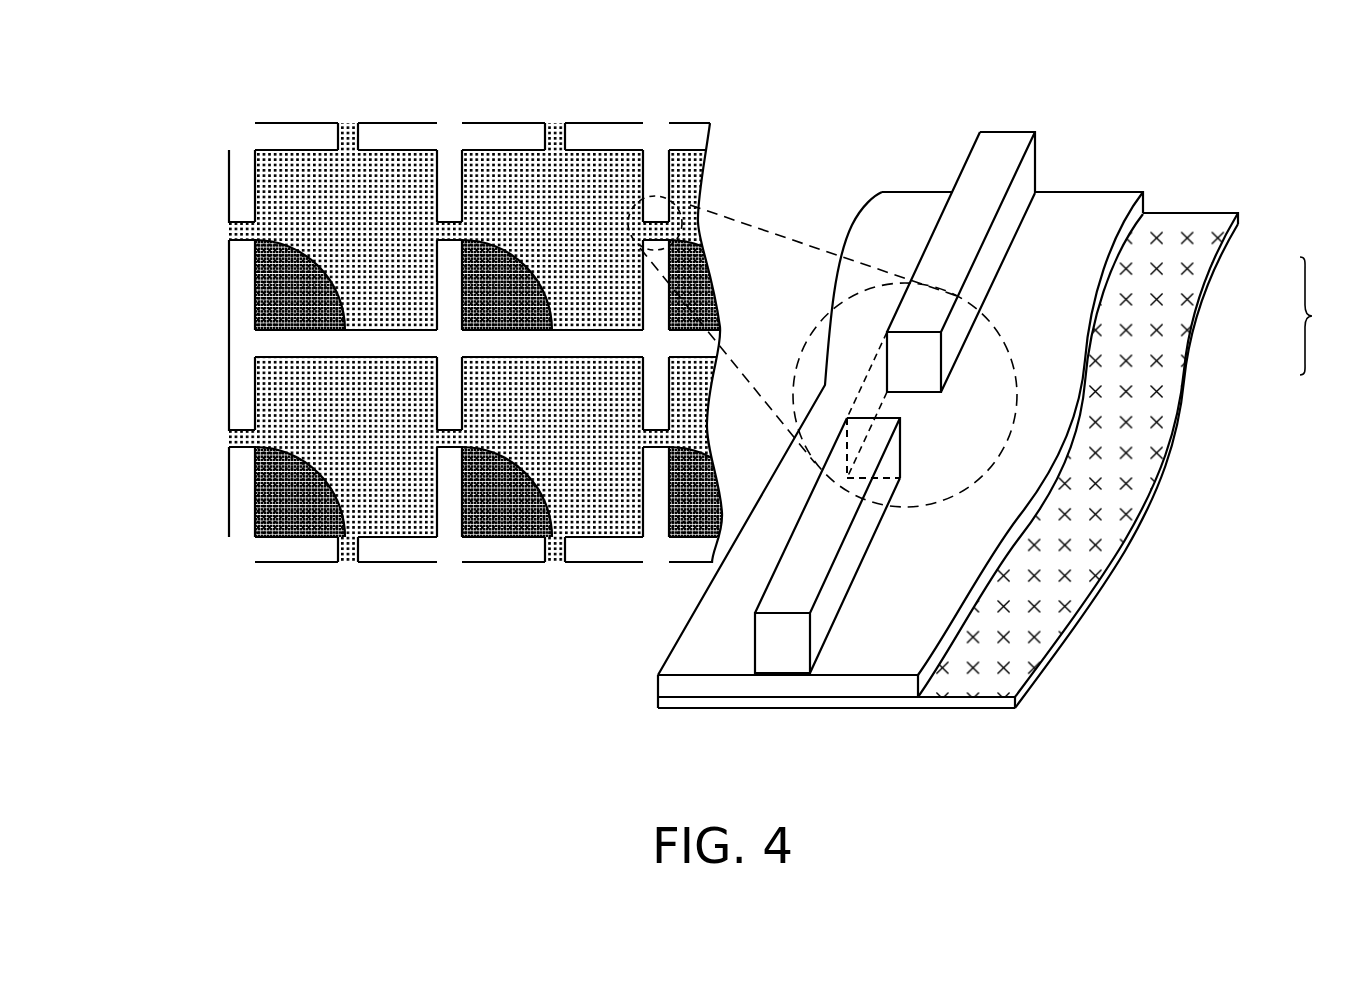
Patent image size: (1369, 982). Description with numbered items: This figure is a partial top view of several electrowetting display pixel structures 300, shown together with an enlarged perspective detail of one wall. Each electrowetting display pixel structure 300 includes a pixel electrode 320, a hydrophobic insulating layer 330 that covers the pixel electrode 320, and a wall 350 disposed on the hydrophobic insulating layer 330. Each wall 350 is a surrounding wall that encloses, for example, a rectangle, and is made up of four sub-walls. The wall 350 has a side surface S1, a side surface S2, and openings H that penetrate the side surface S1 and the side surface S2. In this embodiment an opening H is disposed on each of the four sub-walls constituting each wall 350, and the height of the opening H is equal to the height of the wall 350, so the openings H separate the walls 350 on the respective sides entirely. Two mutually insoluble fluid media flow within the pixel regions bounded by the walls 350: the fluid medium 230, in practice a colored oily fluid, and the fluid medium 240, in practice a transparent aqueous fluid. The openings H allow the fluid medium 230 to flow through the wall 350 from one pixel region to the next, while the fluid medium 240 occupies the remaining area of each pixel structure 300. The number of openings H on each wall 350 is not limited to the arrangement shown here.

The electrowetting display pixel structure 300 is at (1329, 316).
The pixel electrode 320 is at (1172, 258).
The hydrophobic insulating layer 330 is at (1048, 283).
The wall 350 is at (958, 333).
The fluid medium 240 is at (268, 388).
The fluid medium 230 is at (267, 498).
The opening H is at (655, 226).
The side surface S1 is at (636, 167).
The side surface S2 is at (676, 161).